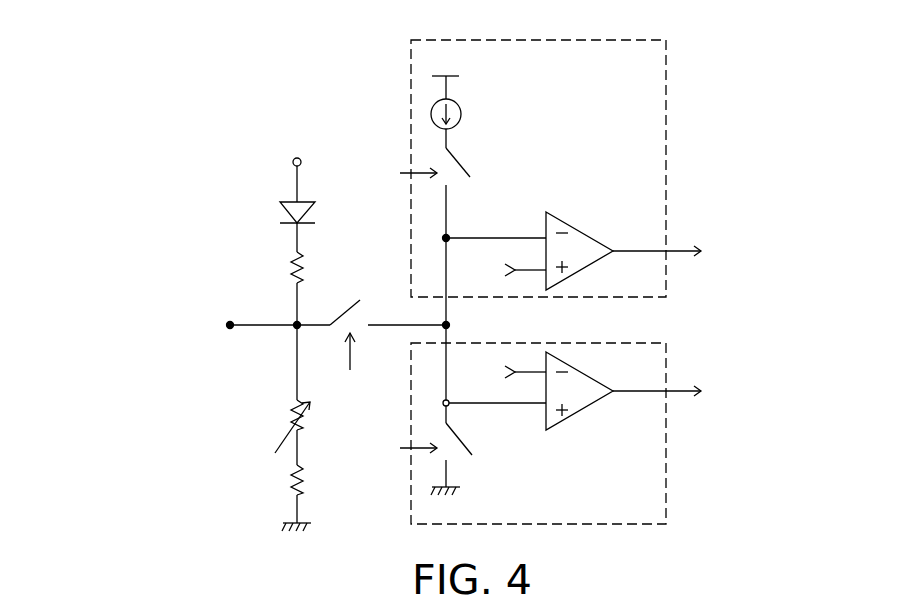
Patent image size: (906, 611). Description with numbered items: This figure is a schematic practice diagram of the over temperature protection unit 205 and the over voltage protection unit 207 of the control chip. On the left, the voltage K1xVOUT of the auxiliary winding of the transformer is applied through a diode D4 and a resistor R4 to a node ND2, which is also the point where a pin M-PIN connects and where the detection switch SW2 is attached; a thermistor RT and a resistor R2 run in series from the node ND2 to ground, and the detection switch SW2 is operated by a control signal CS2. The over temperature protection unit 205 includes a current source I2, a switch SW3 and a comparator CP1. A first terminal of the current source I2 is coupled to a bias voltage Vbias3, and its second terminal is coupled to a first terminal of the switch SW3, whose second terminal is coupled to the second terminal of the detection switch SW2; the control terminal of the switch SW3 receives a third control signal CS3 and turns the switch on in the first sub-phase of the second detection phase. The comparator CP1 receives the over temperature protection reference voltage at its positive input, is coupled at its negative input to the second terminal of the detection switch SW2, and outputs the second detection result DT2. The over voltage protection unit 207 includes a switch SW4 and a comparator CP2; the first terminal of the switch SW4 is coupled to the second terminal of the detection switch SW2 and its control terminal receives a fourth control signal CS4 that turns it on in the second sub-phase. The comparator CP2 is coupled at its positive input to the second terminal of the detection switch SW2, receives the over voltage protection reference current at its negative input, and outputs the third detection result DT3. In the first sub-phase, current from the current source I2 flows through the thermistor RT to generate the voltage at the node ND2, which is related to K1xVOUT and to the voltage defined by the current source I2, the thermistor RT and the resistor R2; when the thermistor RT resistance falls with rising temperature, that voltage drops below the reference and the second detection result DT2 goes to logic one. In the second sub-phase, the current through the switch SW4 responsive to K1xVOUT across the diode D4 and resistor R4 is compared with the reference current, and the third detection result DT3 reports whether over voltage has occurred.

The over temperature protection unit 205 is at (666, 133).
The over voltage protection unit 207 is at (666, 470).
The diode D4 is at (282, 224).
The resistor R4 is at (311, 288).
The resistor R2 is at (306, 498).
The thermistor RT is at (304, 395).
The detection switch SW2 is at (371, 301).
The switch SW3 is at (478, 193).
The switch SW4 is at (470, 450).
The current source I2 is at (457, 123).
The comparator CP1 is at (573, 228).
The comparator CP2 is at (580, 412).
The node ND2 is at (296, 327).
The multi-function pin M-PIN is at (230, 330).
The control signal CS2 is at (353, 364).
The third control signal CS3 is at (400, 173).
The fourth control signal CS4 is at (400, 449).
The second detection result DT2 is at (677, 253).
The third detection result DT3 is at (677, 393).
The voltage of the auxiliary winding K1xVOUT is at (296, 165).
The bias voltage Vbias3 is at (447, 72).